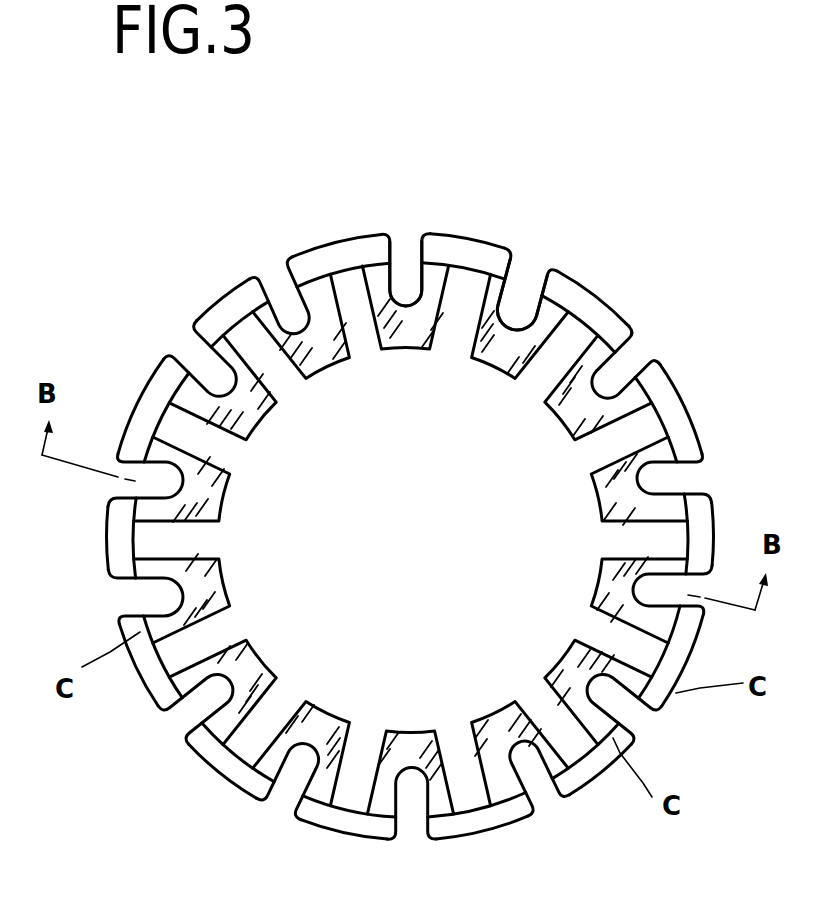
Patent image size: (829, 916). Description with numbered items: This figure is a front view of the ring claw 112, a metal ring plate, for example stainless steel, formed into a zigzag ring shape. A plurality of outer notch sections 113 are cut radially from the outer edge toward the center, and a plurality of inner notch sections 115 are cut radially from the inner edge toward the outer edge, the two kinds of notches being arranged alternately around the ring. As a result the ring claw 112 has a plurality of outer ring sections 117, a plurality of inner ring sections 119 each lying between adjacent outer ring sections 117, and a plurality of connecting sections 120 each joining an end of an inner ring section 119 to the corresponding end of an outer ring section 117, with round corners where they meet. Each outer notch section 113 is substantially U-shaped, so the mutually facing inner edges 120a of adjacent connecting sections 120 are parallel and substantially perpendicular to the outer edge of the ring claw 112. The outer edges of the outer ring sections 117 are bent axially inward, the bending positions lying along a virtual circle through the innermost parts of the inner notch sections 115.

The ring claw 112 is at (628, 178).
The outer notch section 113 is at (404, 258).
The inner notch section 115 is at (358, 346).
The outer ring section 117 is at (487, 238).
The inner ring section 119 is at (318, 372).
The connecting section 120 is at (373, 275).
The inner edge of connecting section 120a is at (202, 362).